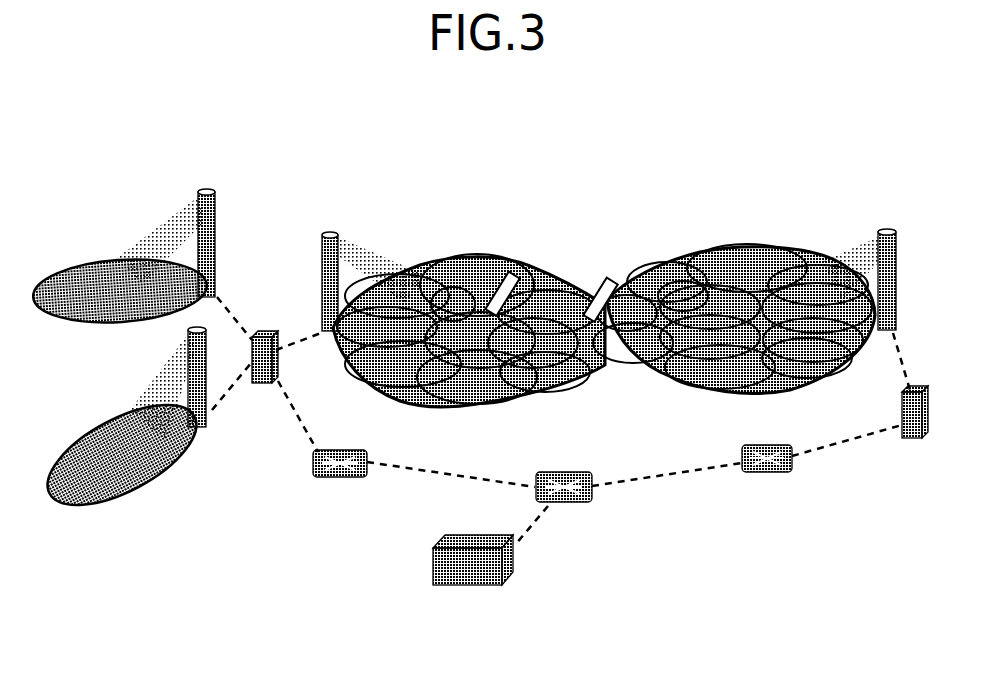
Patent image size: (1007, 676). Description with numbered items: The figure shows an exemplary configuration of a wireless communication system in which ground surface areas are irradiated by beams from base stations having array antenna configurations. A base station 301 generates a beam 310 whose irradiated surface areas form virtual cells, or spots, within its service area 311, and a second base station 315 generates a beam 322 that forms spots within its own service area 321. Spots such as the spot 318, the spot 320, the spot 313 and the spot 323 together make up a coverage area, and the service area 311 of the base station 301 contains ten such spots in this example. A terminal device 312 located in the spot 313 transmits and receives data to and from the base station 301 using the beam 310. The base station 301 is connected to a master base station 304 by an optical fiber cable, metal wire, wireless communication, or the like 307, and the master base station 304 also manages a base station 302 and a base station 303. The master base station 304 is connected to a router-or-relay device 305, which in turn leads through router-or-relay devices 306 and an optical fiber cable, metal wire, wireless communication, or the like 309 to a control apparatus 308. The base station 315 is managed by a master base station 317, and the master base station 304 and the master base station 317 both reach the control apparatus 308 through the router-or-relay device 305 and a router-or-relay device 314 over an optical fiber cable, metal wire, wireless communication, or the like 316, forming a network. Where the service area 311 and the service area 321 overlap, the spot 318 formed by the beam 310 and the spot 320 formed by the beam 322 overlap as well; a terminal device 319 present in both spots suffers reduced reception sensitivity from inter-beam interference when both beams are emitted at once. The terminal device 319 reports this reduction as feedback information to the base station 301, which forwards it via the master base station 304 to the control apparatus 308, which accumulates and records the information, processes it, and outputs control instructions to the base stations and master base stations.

The base station 301 is at (325, 232).
The base station 302 is at (206, 190).
The base station 303 is at (200, 430).
The master base station 304 is at (268, 385).
The router-or-relay device 305 is at (340, 478).
The router-or-relay device 306 is at (594, 470).
The optical fiber cable, metal wire, wireless communication, or the like 307 is at (295, 340).
The control apparatus 308 is at (490, 585).
The optical fiber cable, metal wire, wireless communication, or the like 309 is at (548, 512).
The beam 310 is at (405, 272).
The service area 311 is at (410, 405).
The terminal device 312 is at (505, 270).
The spot 313 is at (452, 262).
The router-or-relay device 314 is at (770, 474).
The base station 315 is at (888, 230).
The optical fiber cable, metal wire, wireless communication, or the like 316 is at (648, 482).
The master base station 317 is at (915, 440).
The spot 318 is at (587, 373).
The terminal device 319 is at (603, 272).
The spot 320 is at (625, 260).
The service area 321 is at (757, 258).
The beam 322 is at (810, 262).
The spot 323 is at (498, 395).